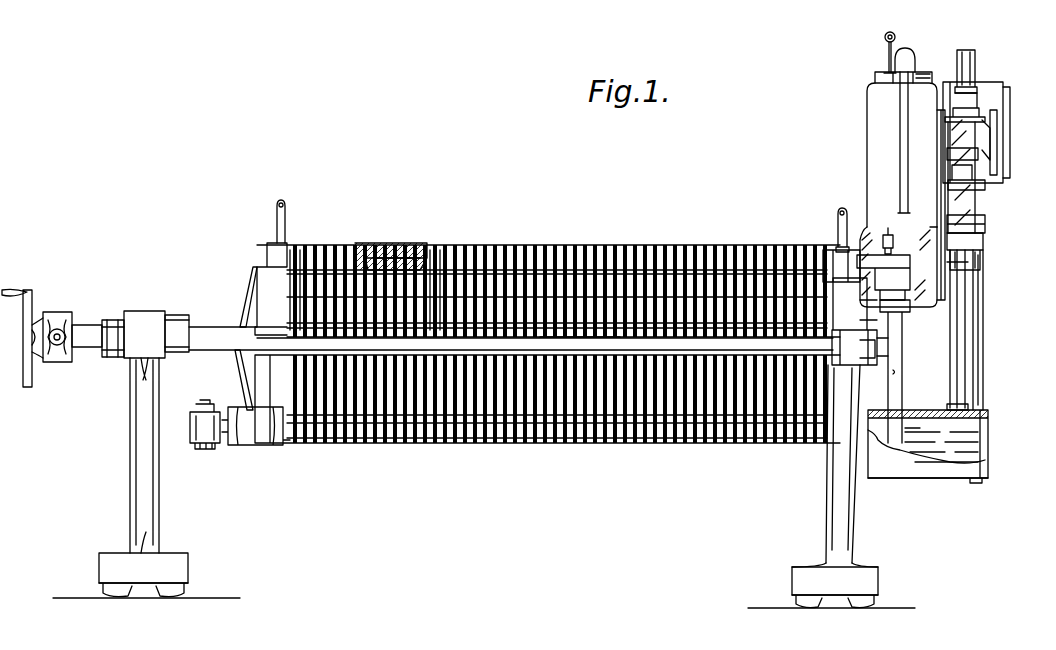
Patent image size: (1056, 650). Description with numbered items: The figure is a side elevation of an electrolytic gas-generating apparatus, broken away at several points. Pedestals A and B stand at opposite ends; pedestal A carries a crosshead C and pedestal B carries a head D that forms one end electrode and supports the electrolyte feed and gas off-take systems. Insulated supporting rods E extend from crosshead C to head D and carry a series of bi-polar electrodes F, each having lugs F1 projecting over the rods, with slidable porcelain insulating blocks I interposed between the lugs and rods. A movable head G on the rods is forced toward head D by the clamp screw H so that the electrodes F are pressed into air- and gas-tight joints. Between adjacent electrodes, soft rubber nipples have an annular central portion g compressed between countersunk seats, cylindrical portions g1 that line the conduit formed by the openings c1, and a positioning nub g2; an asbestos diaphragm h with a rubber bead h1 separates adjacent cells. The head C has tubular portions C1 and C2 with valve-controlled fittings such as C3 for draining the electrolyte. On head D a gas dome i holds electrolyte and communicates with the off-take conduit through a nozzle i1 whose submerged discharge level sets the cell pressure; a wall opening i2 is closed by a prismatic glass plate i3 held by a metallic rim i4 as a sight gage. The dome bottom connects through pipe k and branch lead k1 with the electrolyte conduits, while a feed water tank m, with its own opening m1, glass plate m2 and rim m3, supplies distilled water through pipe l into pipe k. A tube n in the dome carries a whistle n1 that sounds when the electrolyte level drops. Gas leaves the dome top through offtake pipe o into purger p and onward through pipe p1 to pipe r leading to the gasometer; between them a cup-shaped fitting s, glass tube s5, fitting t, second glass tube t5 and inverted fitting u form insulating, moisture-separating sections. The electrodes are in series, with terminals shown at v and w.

The pedestal A is at (136, 458).
The pedestal B is at (828, 500).
The crosshead C is at (178, 314).
The tubular portion C1 is at (250, 396).
The opening c1 is at (414, 248).
The tubular portion C2 is at (253, 432).
The valve controlled fitting C3 is at (211, 445).
The head D is at (859, 321).
The supporting rod E is at (212, 351).
The bi-polar electrode F is at (556, 252).
The lug F1 is at (720, 312).
The movable head G is at (266, 297).
The clamp screw H is at (103, 325).
The insulating block I is at (610, 335).
The annular central portion g is at (470, 246).
The cylindrical portion g1 is at (382, 249).
The nub g2 is at (399, 249).
The diaphragm h is at (360, 247).
The bead h1 is at (722, 398).
The gas dome i is at (870, 104).
The nozzle i1 is at (897, 267).
The opening i2 is at (935, 233).
The prismatic glass plate i3 is at (945, 212).
The metallic rim i4 is at (933, 228).
The pipe k is at (902, 340).
The branch lead k1 is at (870, 433).
The pipe l is at (980, 316).
The feed water tank m is at (998, 86).
The opening m1 is at (1010, 93).
The prismatic glass plate m2 is at (1006, 131).
The metallic rim m3 is at (1002, 153).
The tube n is at (895, 241).
The whistle n1 is at (885, 37).
The gas offtake pipe o is at (900, 128).
The purger p is at (990, 442).
The pipe p1 is at (962, 280).
The pipe r is at (980, 58).
The cup-shaped fitting s is at (984, 235).
The glass tube s5 is at (968, 200).
The fitting t is at (1003, 166).
The glass tube t5 is at (965, 147).
The fitting u is at (985, 118).
The terminal v is at (836, 224).
The terminal w is at (286, 224).